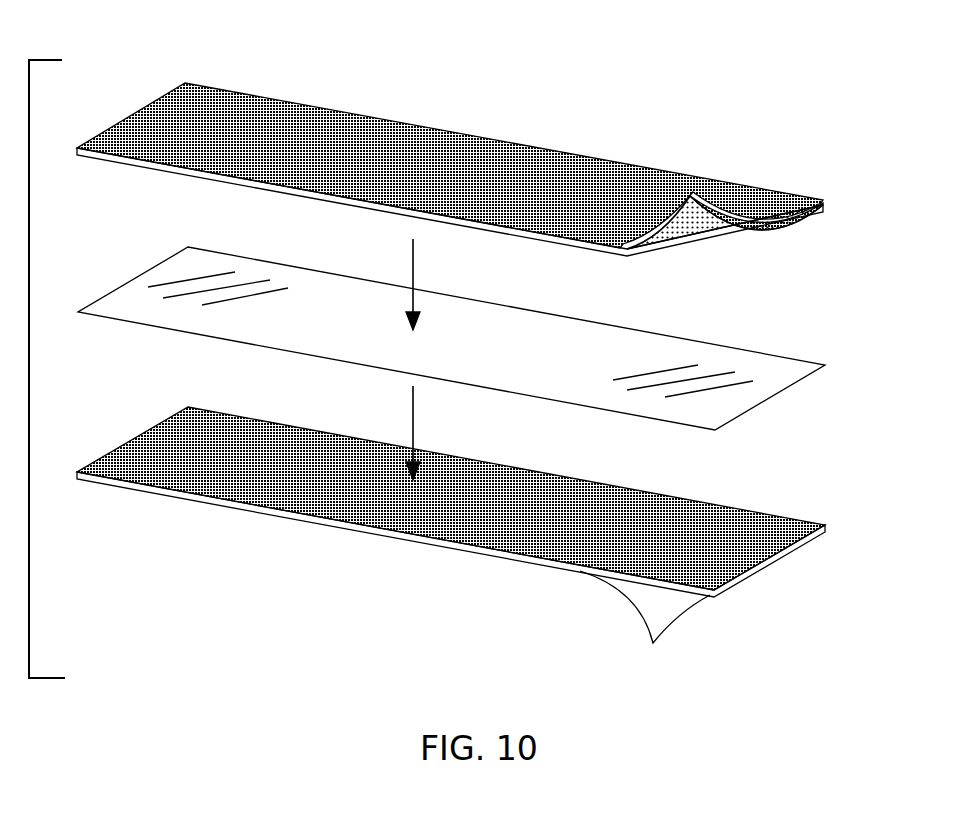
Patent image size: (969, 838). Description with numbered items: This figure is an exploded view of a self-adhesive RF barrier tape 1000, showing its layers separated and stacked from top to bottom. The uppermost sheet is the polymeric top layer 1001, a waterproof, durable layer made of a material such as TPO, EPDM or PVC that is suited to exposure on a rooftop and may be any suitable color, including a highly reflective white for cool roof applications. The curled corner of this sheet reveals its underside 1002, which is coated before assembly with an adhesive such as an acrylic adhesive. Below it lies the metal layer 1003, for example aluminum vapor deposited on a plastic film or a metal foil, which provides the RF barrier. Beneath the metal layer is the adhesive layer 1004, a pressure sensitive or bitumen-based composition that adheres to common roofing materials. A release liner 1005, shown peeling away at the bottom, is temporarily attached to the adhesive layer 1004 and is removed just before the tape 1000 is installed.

The self-adhesive RF barrier tape 1000 is at (683, 103).
The polymeric top layer 1001 is at (745, 197).
The underside of polymeric top layer 1002 is at (728, 230).
The metal layer 1003 is at (793, 370).
The adhesive layer 1004 is at (787, 517).
The release liner 1005 is at (640, 598).